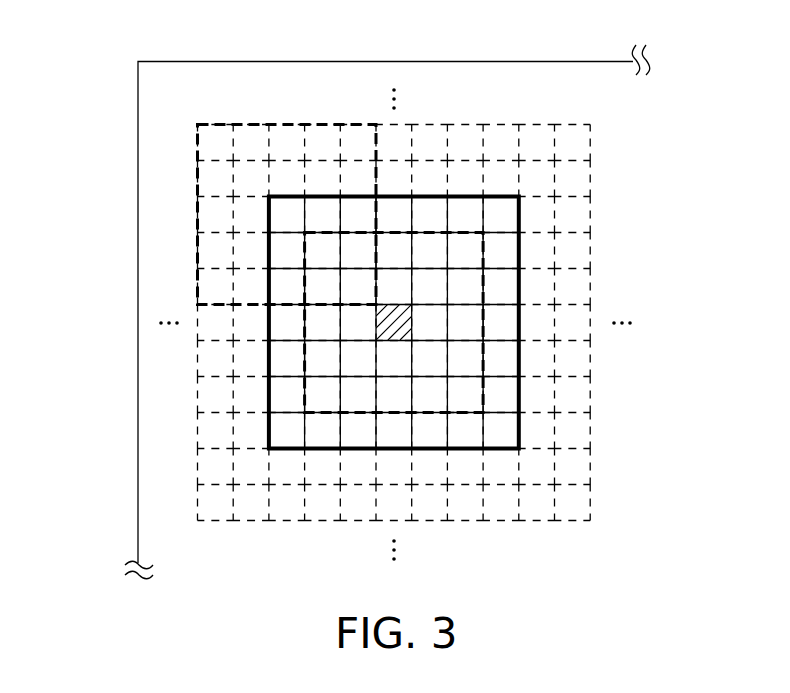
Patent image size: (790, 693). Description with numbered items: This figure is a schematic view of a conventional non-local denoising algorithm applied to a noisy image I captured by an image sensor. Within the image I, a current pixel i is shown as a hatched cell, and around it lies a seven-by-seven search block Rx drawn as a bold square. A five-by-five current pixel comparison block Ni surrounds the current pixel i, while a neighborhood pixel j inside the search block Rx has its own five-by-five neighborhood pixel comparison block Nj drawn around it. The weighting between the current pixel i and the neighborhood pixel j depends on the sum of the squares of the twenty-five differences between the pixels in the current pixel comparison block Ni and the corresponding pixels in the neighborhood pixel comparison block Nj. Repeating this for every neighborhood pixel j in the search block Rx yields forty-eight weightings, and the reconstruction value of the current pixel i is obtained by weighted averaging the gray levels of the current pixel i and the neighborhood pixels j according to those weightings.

The image I is at (138, 160).
The neighborhood pixel j is at (285, 217).
The neighborhood pixel comparison block Nj is at (217, 124).
The search block Rx is at (500, 196).
The current pixel comparison block Ni is at (484, 248).
The current pixel i is at (412, 322).